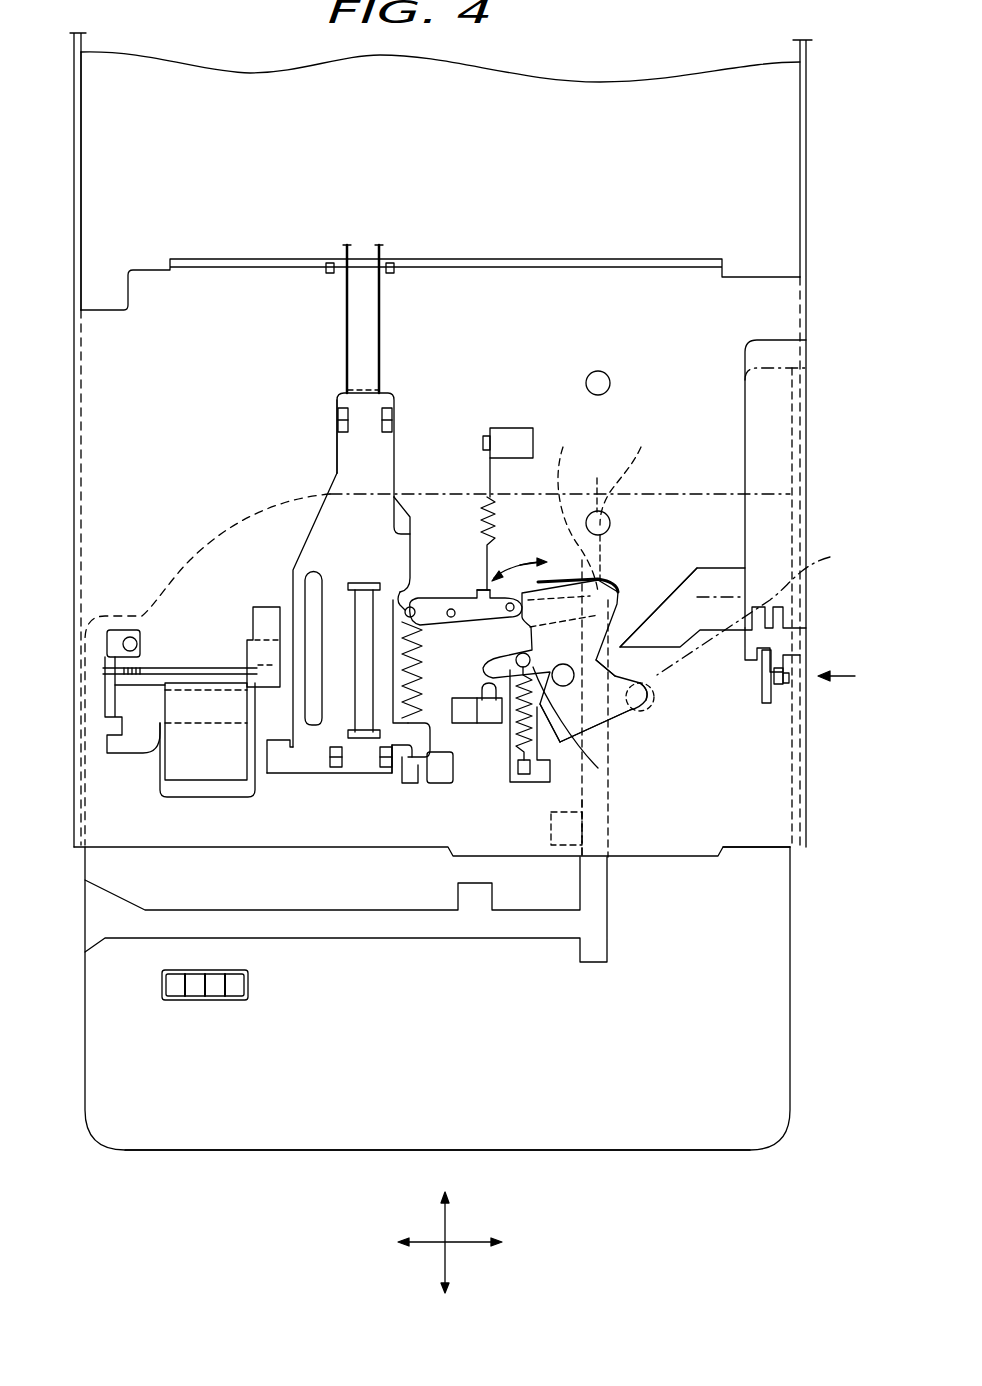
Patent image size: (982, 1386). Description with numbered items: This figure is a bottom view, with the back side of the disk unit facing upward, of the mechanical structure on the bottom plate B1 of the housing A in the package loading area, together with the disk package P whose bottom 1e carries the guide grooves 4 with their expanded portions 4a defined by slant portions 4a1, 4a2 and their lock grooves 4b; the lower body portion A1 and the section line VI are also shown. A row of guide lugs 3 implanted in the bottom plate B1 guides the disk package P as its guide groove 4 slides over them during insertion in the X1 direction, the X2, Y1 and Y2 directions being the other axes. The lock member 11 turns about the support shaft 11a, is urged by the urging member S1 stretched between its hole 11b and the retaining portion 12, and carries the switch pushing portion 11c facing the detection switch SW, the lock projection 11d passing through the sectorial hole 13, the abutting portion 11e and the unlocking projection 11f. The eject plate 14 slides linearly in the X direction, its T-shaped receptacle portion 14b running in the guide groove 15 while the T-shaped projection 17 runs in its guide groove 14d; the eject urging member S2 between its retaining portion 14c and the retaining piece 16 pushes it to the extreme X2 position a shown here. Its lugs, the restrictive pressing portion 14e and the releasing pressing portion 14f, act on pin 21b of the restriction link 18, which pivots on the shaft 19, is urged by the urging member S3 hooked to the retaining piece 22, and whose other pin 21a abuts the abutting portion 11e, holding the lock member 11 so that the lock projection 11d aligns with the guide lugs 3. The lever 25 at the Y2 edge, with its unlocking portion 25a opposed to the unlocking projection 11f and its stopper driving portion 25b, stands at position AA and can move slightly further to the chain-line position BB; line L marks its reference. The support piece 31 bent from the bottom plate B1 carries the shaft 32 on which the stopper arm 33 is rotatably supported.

The housing A is at (811, 223).
The apparatus body portion A1 is at (693, 864).
The bottom plate B1 is at (86, 410).
The disk package P is at (222, 1142).
The bottom 1e is at (782, 1020).
The guide lugs 3 is at (608, 381).
The guide grooves 4 is at (543, 935).
The expanded portion 4a is at (596, 515).
The slant portion 4a1 is at (570, 506).
The slant portion 4a2 is at (632, 472).
The lock groove 4b is at (562, 846).
The lock member 11 is at (634, 698).
The support shaft 11a is at (575, 688).
The hole 11b is at (600, 787).
The switch pushing portion 11c is at (463, 716).
The lock projection 11d is at (610, 584).
The abutting portion 11e is at (656, 628).
The unlocking projection 11f is at (650, 684).
The retaining portion 12 is at (521, 783).
The sectorial hole 13 is at (620, 624).
The eject plate 14 is at (326, 530).
The receptacle portion 14b is at (372, 388).
The retaining portion 14c is at (408, 505).
The guide groove 14d is at (365, 738).
The restrictive pressing portion 14e is at (416, 598).
The releasing pressing portion 14f is at (427, 790).
The guide groove 15 is at (380, 298).
The retaining piece 16 is at (413, 782).
The T-shaped projection 17 is at (363, 586).
The restriction link 18 is at (466, 598).
The shaft 19 is at (414, 690).
The pin 21a is at (510, 614).
The pin 21b is at (402, 607).
The retaining piece 22 is at (500, 432).
The lever 25 is at (790, 398).
The unlocking portion 25a is at (680, 665).
The stopper driving portion 25b is at (808, 627).
The support piece 31 is at (784, 678).
The shaft 32 is at (790, 683).
The stopper arm 33 is at (764, 703).
The urging member S1 is at (598, 830).
The eject urging member S2 is at (387, 648).
The restrictive urging means S3 is at (486, 518).
The detection switch SW is at (443, 760).
The position a is at (335, 462).
The reference line L is at (714, 590).
The position AA is at (690, 577).
The position BB is at (760, 605).
The section line VI is at (857, 676).
The direction X1 is at (444, 1225).
The direction X2 is at (444, 1300).
The direction Y1 is at (431, 1242).
The direction Y2 is at (513, 1242).